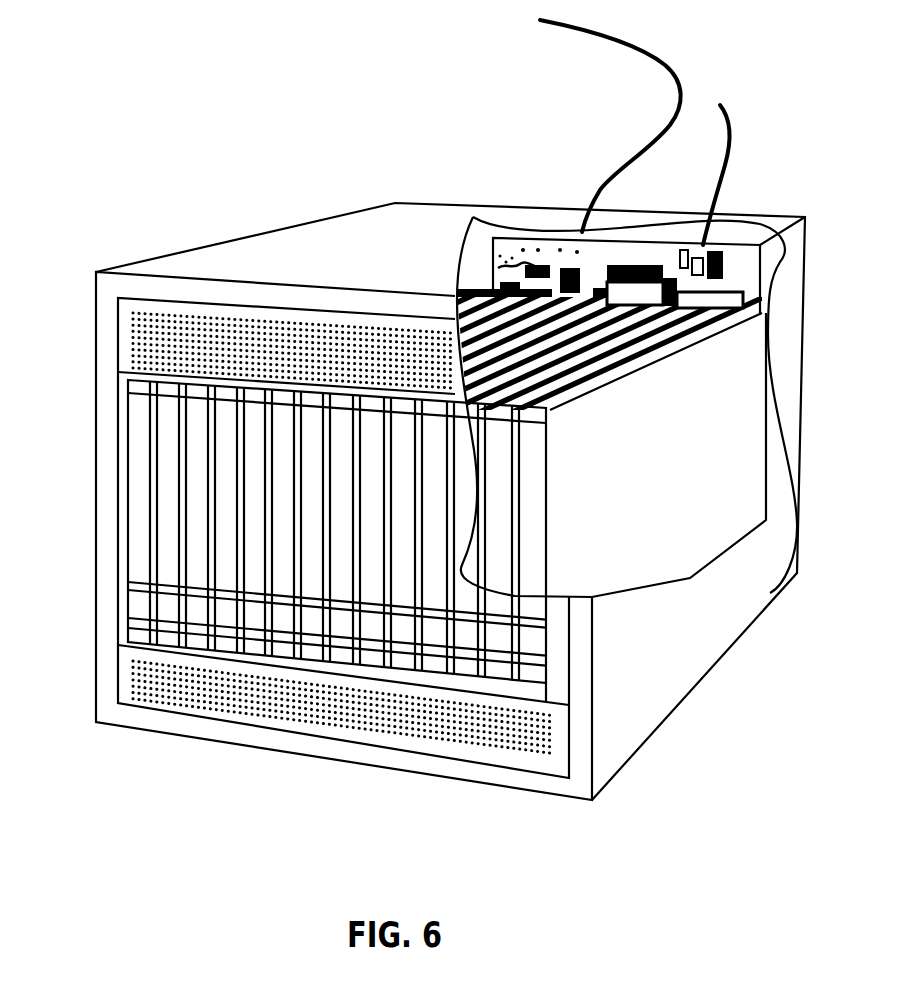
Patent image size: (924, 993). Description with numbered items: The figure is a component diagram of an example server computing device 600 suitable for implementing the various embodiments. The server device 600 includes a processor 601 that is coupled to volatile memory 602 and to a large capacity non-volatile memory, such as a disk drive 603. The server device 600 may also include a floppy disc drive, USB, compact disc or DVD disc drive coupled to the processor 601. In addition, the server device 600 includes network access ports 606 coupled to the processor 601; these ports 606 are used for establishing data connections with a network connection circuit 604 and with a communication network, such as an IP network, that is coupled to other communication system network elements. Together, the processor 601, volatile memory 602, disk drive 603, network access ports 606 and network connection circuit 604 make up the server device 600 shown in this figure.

The server computing device 600 is at (314, 222).
The processor 601 is at (608, 246).
The volatile memory 602 is at (735, 244).
The disk drive 603 is at (203, 458).
The network connection circuit 604 is at (683, 88).
The network access ports 606 is at (475, 280).